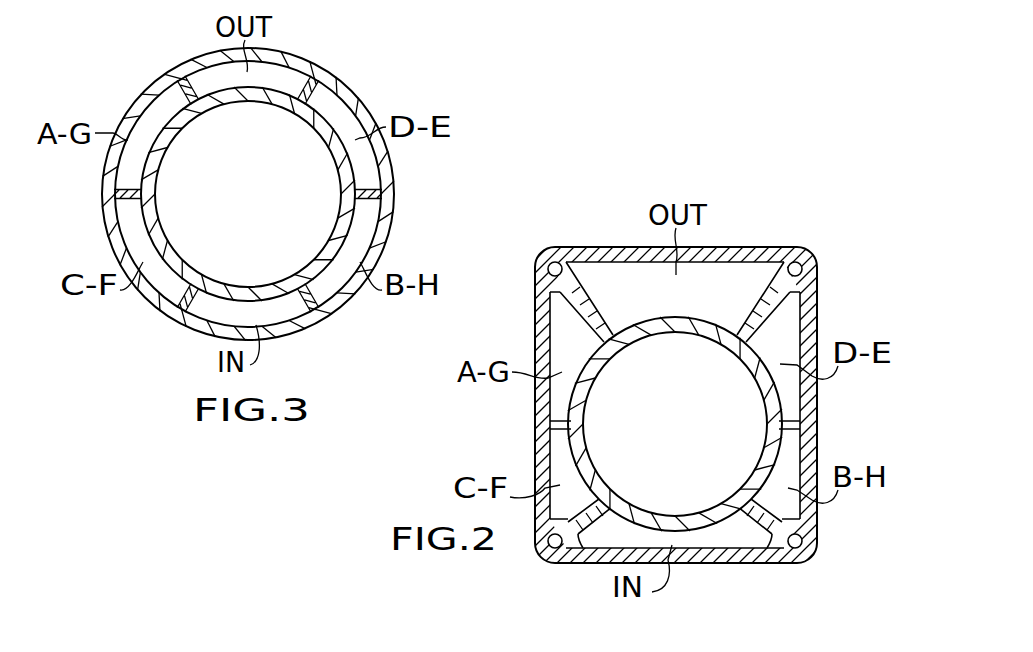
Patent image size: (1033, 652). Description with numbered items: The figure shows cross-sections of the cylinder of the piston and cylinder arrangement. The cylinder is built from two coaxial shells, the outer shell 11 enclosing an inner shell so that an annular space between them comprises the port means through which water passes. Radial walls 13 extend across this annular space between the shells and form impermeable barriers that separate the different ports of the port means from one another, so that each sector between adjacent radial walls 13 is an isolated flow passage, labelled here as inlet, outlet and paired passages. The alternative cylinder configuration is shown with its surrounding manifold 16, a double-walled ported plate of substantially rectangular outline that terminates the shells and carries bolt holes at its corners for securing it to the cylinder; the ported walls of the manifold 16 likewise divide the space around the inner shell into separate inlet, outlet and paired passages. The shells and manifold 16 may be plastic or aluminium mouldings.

In FIG. 3, the outer shell 11 is at (132, 108).
In FIG. 3, the radial walls 13 is at (186, 78).
In FIG. 2, the manifold 16 is at (527, 405).